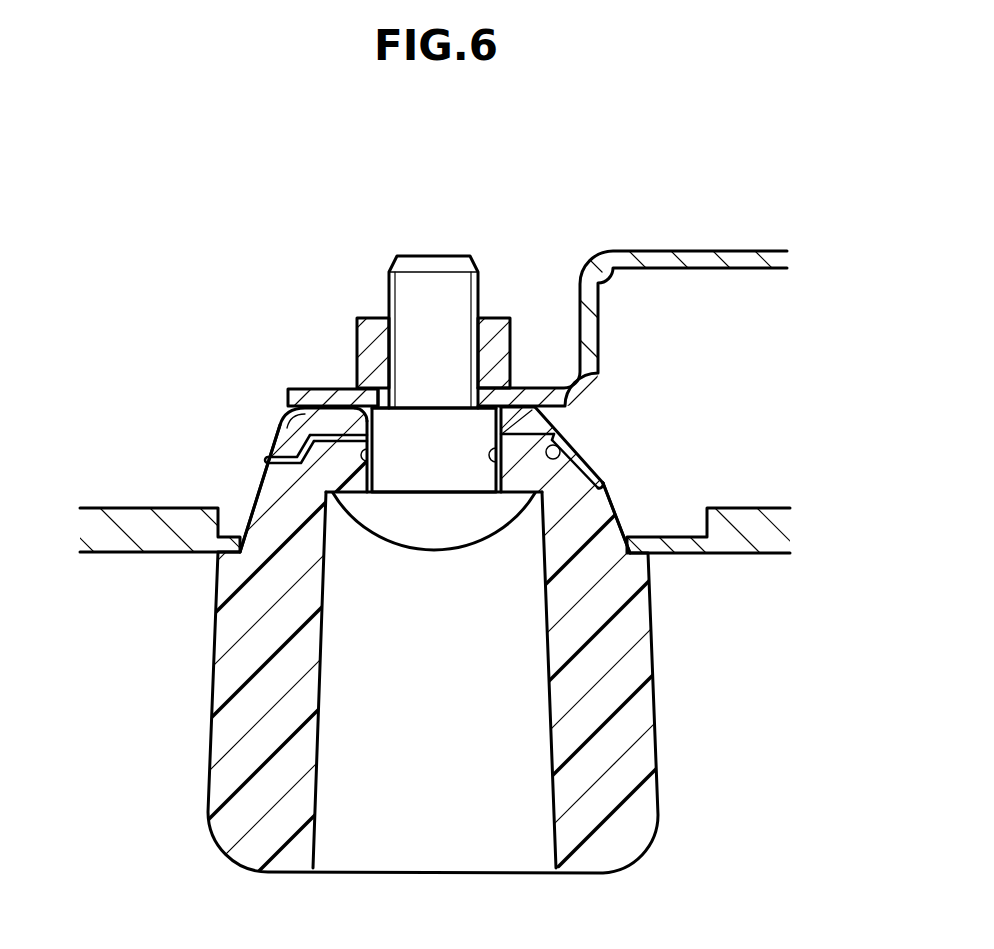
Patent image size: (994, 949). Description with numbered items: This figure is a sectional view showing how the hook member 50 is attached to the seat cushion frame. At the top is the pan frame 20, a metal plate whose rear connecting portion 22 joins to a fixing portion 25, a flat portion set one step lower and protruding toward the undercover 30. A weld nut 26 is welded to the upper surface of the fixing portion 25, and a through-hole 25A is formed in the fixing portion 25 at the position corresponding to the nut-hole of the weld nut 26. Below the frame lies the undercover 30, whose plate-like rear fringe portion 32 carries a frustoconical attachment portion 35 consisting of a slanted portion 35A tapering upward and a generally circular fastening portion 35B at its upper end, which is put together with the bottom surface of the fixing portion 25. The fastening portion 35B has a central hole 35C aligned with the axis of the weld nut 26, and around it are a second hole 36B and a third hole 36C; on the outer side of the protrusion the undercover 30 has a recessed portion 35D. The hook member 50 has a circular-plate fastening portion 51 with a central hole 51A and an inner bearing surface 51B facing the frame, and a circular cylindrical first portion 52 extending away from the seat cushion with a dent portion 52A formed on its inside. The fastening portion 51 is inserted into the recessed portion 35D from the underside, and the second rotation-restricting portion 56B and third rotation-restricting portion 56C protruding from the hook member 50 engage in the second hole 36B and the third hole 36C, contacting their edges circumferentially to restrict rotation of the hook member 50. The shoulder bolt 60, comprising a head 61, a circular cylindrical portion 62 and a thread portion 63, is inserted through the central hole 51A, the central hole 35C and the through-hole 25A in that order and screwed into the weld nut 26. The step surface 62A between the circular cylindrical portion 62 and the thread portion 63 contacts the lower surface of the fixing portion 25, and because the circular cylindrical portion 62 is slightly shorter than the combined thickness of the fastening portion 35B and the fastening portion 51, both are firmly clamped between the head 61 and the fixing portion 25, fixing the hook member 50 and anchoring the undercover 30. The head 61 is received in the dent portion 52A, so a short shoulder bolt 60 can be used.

The pan frame 20 is at (717, 247).
The rear connecting portion 22 is at (650, 260).
The fixing portion 25 is at (287, 388).
The through-hole 25A is at (388, 394).
The weld nut 26 is at (494, 325).
The undercover 30 is at (775, 568).
The rear fringe portion 32 is at (737, 543).
The attachment portion 35 is at (288, 400).
The slanted portion 35A is at (583, 462).
The fastening portion 35B is at (528, 413).
The central hole 35C is at (358, 392).
The recessed portion 35D is at (573, 442).
The second hole 36B is at (267, 465).
The third hole 36C is at (605, 486).
The hook member 50 is at (668, 788).
The fastening portion 51 is at (280, 440).
The central hole 51A is at (553, 438).
The inner bearing surface 51B is at (284, 416).
The first portion 52 is at (630, 665).
The dent portion 52A is at (548, 705).
The second rotation-restricting portion 56B is at (275, 503).
The third rotation-restricting portion 56C is at (593, 513).
The shoulder bolt 60 is at (451, 557).
The head 61 is at (423, 532).
The circular cylindrical portion 62 is at (468, 478).
The step surface 62A is at (490, 396).
The thread portion 63 is at (428, 290).